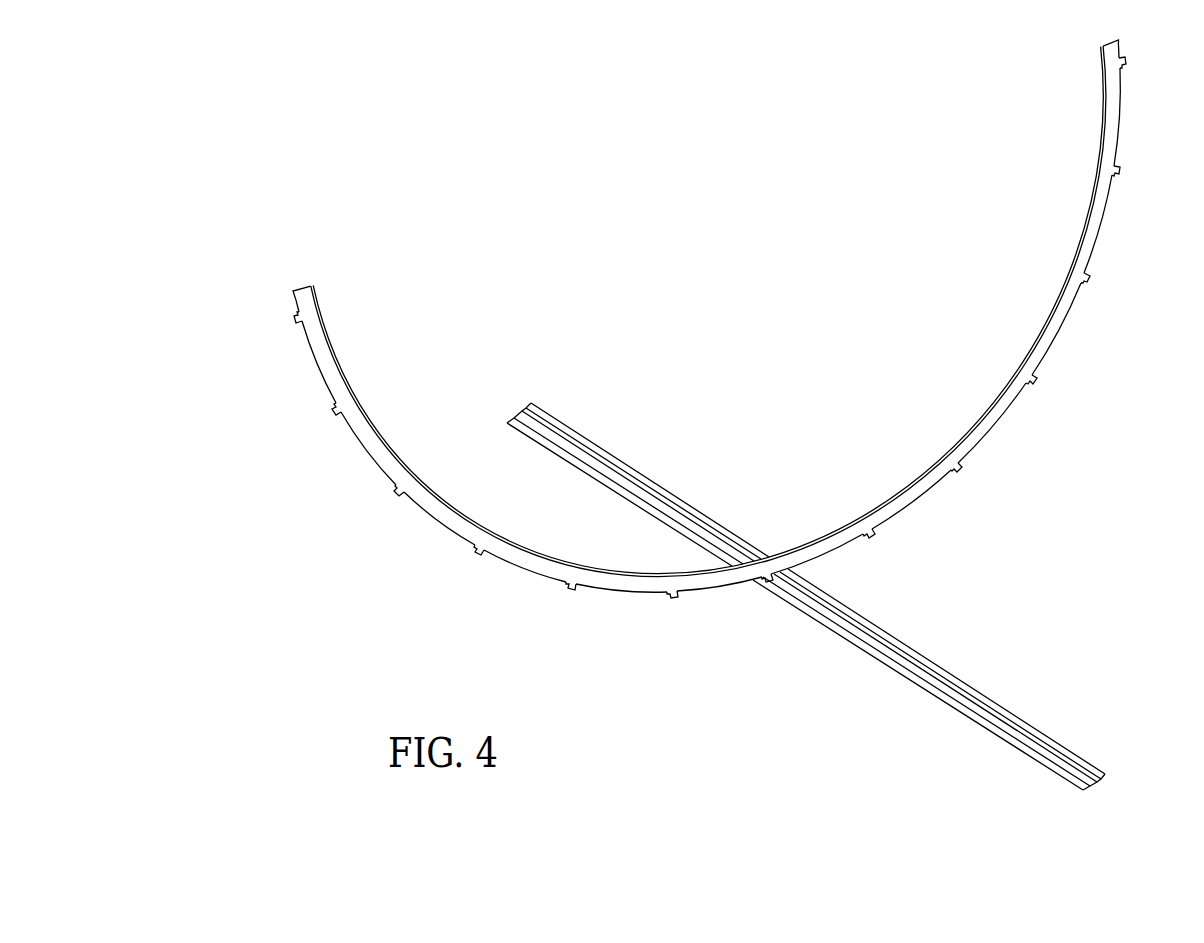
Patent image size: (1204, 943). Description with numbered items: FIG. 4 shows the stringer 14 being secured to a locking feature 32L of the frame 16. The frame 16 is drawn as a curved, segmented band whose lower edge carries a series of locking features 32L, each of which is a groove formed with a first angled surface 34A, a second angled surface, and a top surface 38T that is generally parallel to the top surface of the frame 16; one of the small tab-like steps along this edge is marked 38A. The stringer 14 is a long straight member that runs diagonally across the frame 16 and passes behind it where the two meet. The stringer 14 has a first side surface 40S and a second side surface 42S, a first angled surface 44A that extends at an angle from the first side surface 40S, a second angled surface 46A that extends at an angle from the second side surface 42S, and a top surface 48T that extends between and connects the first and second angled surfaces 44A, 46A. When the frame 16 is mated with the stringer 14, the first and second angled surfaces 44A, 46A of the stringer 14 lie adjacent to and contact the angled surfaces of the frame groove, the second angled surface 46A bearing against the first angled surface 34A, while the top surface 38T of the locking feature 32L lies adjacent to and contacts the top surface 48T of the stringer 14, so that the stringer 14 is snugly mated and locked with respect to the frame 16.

The stringer 14 is at (842, 596).
The frame 16 is at (709, 334).
The locking feature 32L is at (1034, 380).
The first angled surface 34A is at (870, 536).
The top surface 38T is at (1024, 375).
The tab 38A is at (768, 590).
The first side surface 40S is at (910, 683).
The second side surface 42S is at (1112, 781).
The first angled surface 44A is at (1040, 763).
The second angled surface 46A is at (1104, 771).
The top surface 48T is at (950, 672).